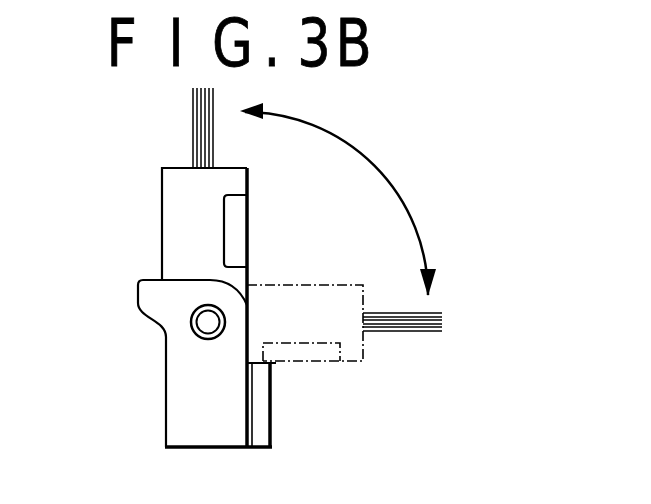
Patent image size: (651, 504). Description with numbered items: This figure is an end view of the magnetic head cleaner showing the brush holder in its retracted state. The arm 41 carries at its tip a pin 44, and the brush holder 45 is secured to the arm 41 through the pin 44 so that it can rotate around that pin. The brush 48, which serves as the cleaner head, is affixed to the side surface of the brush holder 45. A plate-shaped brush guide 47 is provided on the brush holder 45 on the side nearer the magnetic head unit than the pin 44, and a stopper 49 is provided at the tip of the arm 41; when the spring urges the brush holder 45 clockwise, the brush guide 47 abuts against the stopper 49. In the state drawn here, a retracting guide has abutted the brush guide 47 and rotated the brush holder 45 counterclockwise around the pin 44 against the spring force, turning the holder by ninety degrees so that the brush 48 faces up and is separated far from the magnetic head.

The arm 41 is at (188, 409).
The pin 44 is at (205, 323).
The brush holder 45 is at (163, 190).
The brush guide 47 is at (238, 213).
The brush 48 is at (196, 113).
The stopper 49 is at (259, 432).